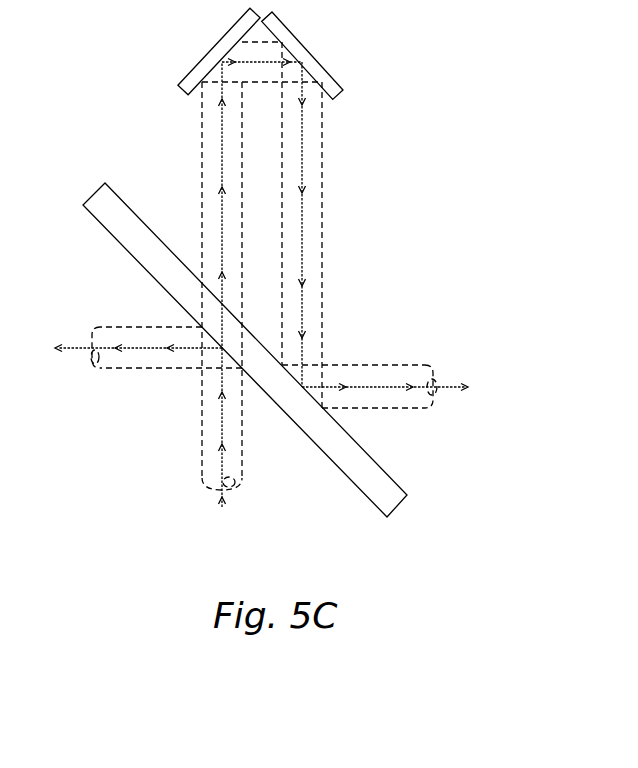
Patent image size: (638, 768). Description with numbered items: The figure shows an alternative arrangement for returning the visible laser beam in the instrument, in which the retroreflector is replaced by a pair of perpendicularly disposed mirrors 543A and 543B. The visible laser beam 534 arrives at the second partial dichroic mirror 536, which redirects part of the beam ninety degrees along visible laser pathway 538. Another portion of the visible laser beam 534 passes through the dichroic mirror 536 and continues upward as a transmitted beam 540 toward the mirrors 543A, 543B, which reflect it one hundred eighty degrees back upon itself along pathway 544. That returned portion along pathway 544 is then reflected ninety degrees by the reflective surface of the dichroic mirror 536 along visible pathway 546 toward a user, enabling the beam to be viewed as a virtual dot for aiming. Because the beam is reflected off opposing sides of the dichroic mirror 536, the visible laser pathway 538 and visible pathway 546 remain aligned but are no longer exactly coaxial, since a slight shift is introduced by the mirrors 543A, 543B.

The visible laser beam 534 is at (221, 418).
The second dichroic mirror 536 is at (93, 196).
The visible laser pathway 538 is at (78, 347).
The transmitted beam 540 is at (221, 170).
The first mirror 543A is at (217, 49).
The second mirror 543B is at (305, 46).
The pathway 544 is at (302, 208).
The visible pathway 546 is at (450, 386).